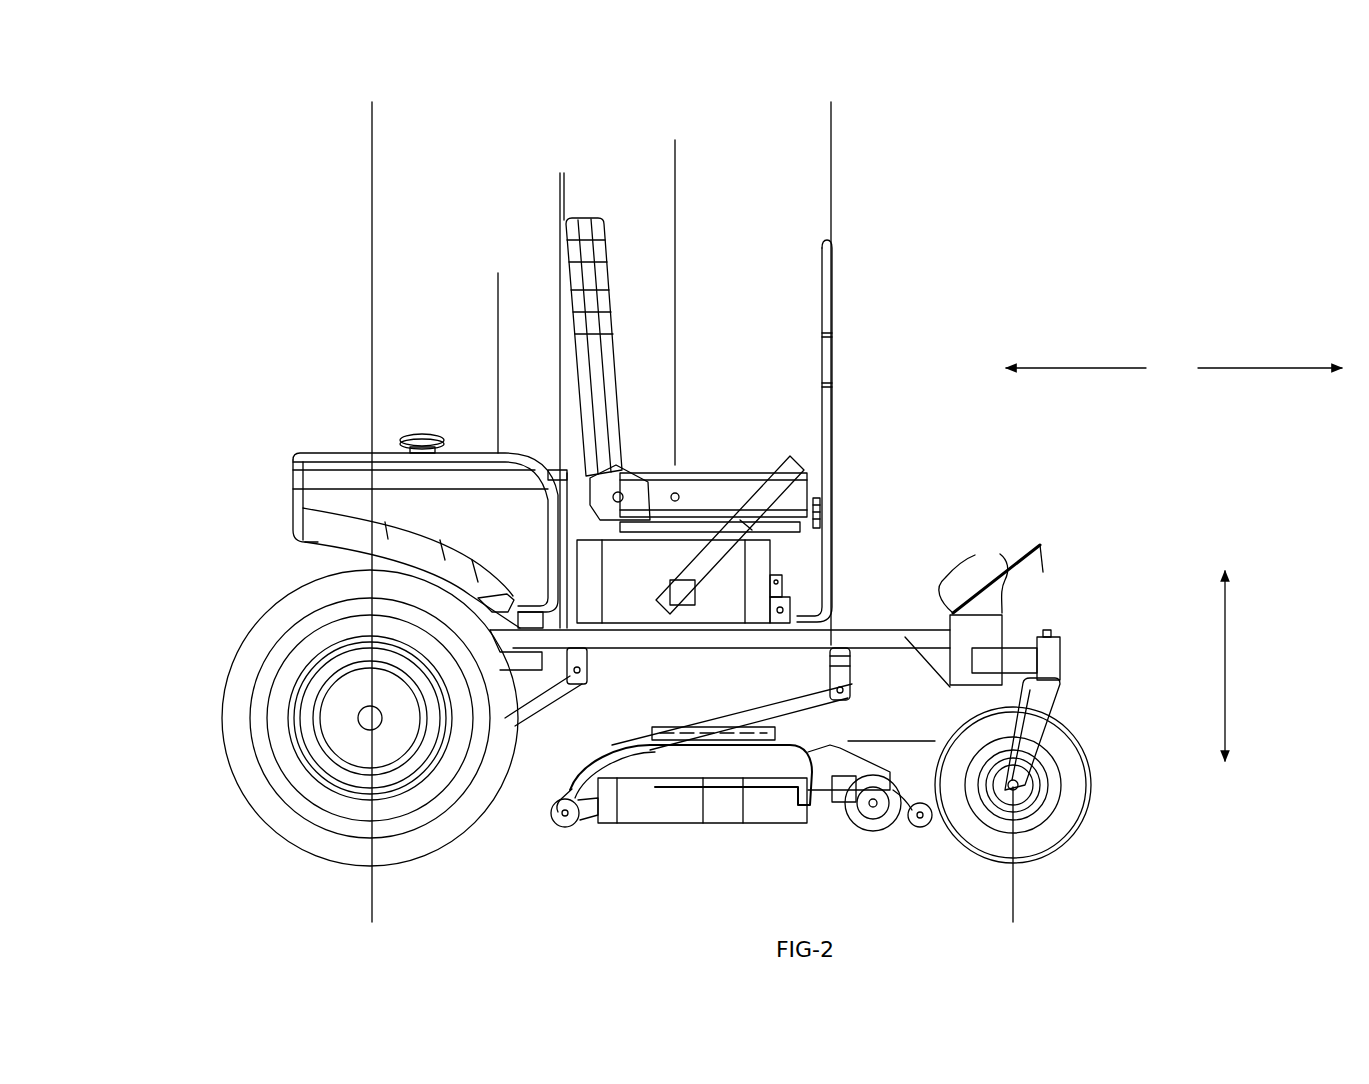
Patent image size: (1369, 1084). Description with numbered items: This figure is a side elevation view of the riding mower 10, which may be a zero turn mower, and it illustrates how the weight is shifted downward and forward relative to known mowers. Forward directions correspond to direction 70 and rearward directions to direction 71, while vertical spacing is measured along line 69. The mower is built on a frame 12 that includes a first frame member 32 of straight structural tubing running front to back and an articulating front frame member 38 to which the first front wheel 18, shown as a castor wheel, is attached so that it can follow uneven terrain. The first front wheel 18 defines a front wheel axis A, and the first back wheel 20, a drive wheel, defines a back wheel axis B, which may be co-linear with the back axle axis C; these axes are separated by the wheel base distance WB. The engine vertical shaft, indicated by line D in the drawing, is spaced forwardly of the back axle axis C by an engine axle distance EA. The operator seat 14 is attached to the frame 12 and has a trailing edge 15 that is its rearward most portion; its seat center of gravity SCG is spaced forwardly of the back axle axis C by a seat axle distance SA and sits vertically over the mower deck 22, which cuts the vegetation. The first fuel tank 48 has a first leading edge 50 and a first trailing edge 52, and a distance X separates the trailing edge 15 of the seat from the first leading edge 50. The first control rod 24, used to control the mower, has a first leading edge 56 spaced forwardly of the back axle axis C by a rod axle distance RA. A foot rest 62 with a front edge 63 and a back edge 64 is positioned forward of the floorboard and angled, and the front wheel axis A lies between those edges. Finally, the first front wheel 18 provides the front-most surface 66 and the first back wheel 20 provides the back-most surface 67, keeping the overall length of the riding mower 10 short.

The riding mower 10 is at (955, 268).
The frame 12 is at (858, 642).
The operator seat 14 is at (616, 368).
The trailing edge 15 is at (568, 222).
The first front wheel 18 is at (1082, 750).
The first back wheel 20 is at (232, 700).
The mower deck 22 is at (730, 822).
The first control rod 24 is at (822, 286).
The first frame member 32 is at (704, 645).
The articulating front frame member 38 is at (1020, 658).
The first fuel tank 48 is at (310, 507).
The first leading edge 50 is at (582, 473).
The first trailing edge 52 is at (292, 470).
The first leading edge 56 is at (832, 299).
The foot rest 62 is at (1006, 568).
The front edge 63 is at (1048, 552).
The back edge 64 is at (962, 598).
The front-most surface 66 is at (1094, 790).
The back-most surface 67 is at (230, 773).
The line 69 is at (1228, 666).
The direction 70 is at (1262, 368).
The direction 71 is at (1086, 368).
The front wheel axis A is at (1013, 785).
The back wheel axis B is at (378, 715).
The back axle axis C is at (375, 722).
The engine reference line D is at (498, 285).
The distance X is at (612, 189).
The rod axle distance RA is at (372, 120).
The seat axle distance SA is at (675, 152).
The engine axle distance EA is at (372, 327).
The wheel base distance WB is at (1013, 900).
The seat center of gravity SCG is at (680, 490).